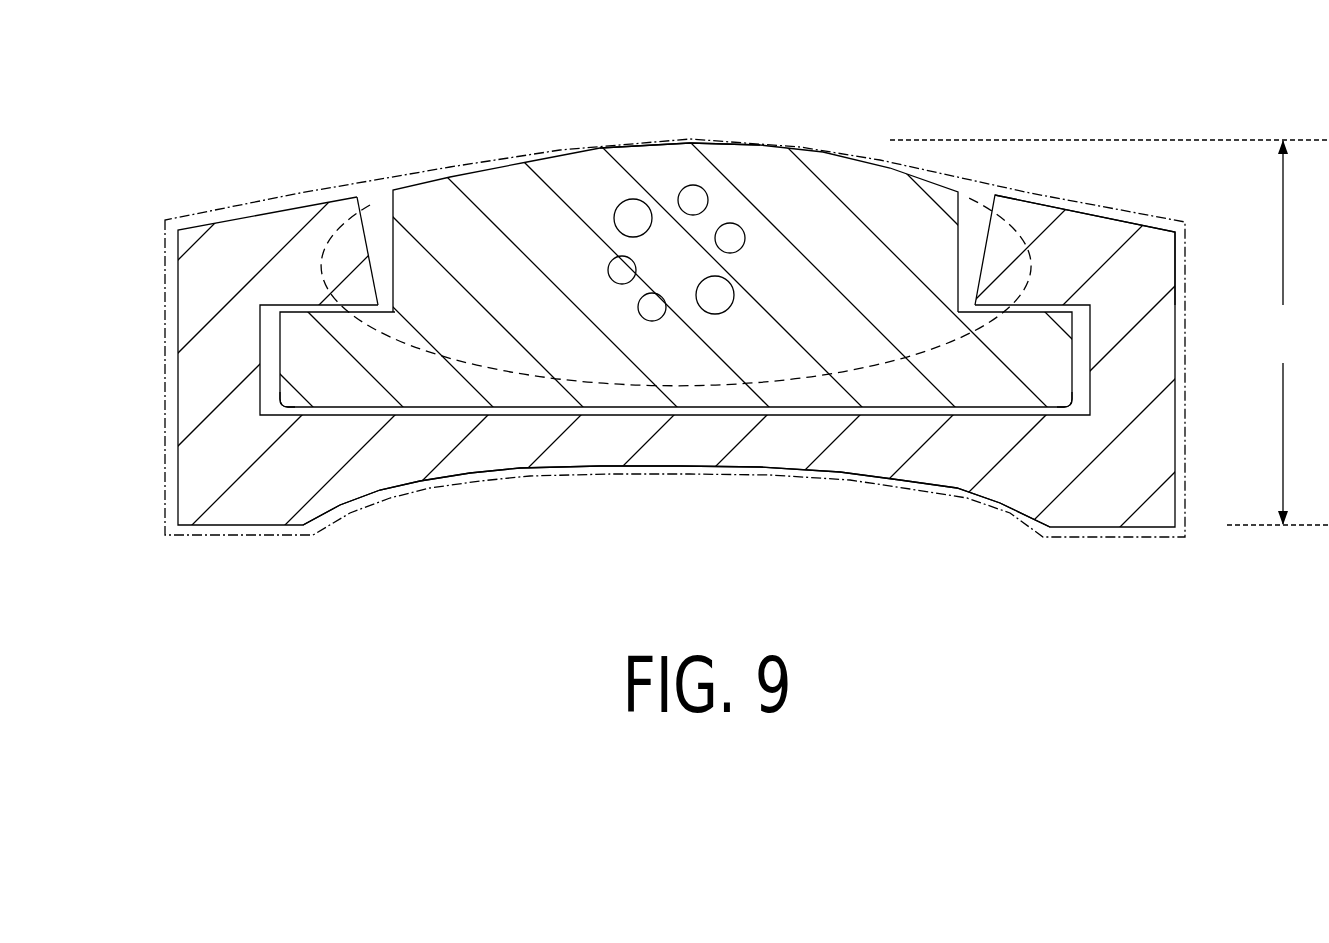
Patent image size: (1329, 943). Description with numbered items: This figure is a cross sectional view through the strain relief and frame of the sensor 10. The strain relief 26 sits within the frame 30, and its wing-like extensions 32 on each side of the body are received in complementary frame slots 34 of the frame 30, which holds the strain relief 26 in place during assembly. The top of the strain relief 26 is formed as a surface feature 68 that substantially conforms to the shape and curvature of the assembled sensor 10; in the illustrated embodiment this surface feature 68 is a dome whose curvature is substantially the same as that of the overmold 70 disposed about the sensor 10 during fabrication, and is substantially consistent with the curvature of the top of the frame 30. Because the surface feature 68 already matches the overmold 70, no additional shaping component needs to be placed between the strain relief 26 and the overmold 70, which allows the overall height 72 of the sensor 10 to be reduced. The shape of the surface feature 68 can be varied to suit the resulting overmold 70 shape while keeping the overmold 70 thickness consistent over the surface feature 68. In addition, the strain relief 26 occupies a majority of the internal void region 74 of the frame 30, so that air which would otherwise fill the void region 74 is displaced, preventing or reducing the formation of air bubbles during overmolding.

The sensor 10 is at (1049, 98).
The strain relief 26 is at (802, 203).
The frame 30 is at (1067, 245).
The extensions 32 is at (310, 375).
The frame slot 34 is at (1093, 316).
The surface feature 68 is at (668, 165).
The overmold 70 is at (960, 500).
The overall height 72 is at (1109, 332).
The void region 74 is at (735, 140).